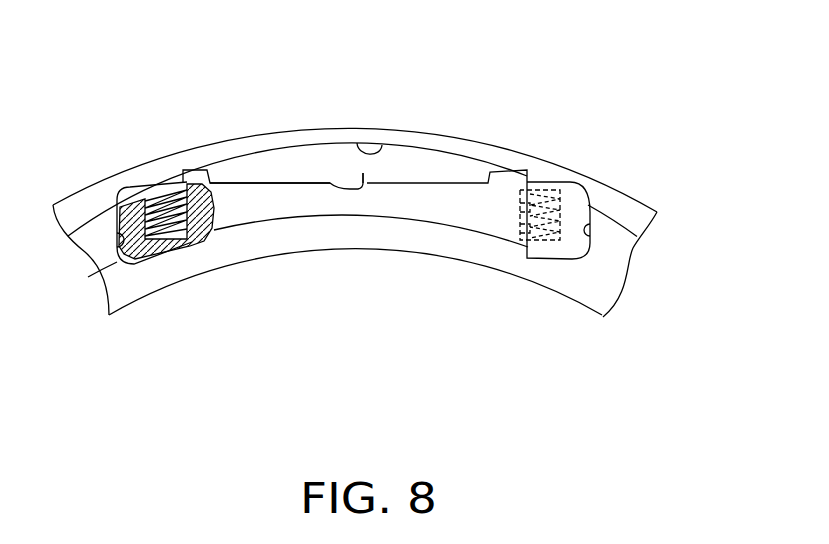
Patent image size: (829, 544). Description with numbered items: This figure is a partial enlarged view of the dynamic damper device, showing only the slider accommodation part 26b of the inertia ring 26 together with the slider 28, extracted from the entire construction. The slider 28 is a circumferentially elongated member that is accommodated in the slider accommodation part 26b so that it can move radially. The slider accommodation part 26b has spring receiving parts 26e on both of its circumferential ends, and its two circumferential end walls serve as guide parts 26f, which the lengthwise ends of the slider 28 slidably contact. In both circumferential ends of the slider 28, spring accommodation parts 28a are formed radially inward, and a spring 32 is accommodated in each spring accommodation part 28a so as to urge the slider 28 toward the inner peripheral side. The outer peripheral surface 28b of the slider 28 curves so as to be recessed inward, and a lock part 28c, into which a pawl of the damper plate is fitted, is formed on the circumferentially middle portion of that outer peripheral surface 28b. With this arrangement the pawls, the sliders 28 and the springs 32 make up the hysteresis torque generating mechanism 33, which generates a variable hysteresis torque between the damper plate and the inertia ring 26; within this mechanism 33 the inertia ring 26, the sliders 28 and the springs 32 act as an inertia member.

The inertia ring 26 is at (613, 200).
The slider accommodation part 26b is at (380, 142).
The spring receiving part 26e is at (155, 188).
The guide part 26f is at (130, 243).
The slider 28 is at (403, 218).
The spring accommodation part 28a is at (173, 252).
The outer peripheral surface 28b is at (272, 181).
The lock part 28c is at (363, 172).
The spring 32 is at (155, 186).
The hysteresis torque generating mechanism 33 is at (453, 169).